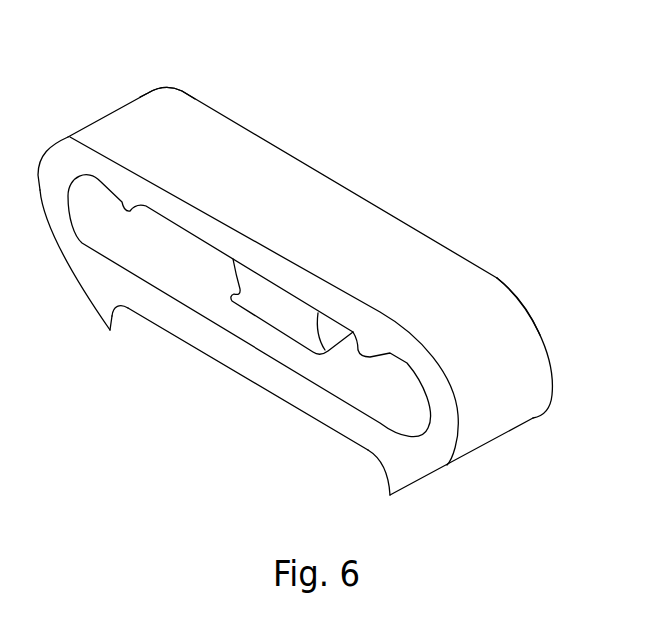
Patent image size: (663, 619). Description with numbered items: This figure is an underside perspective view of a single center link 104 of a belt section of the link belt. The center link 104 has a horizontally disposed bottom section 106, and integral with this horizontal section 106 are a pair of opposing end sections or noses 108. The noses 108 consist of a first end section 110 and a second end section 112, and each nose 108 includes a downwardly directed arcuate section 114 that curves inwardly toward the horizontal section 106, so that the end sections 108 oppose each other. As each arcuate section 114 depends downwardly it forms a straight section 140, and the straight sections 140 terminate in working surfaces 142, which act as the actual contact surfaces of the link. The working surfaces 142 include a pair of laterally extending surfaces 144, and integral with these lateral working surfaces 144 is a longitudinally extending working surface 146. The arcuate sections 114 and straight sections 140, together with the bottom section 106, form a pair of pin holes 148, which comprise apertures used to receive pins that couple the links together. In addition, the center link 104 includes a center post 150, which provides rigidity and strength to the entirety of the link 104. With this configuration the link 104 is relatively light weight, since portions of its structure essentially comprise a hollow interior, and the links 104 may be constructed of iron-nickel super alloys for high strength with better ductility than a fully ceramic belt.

The center link 104 is at (304, 283).
The bottom section 106 is at (332, 225).
The noses 108 is at (91, 125).
The first end section 110 is at (148, 98).
The second end section 112 is at (513, 420).
The arcuate section 114 is at (510, 308).
The straight sections 140 is at (87, 300).
The working surfaces 142 is at (108, 331).
The laterally extending surfaces 144 is at (121, 320).
The longitudinally extending working surface 146 is at (288, 405).
The pin holes 148 is at (88, 192).
The center post 150 is at (277, 305).